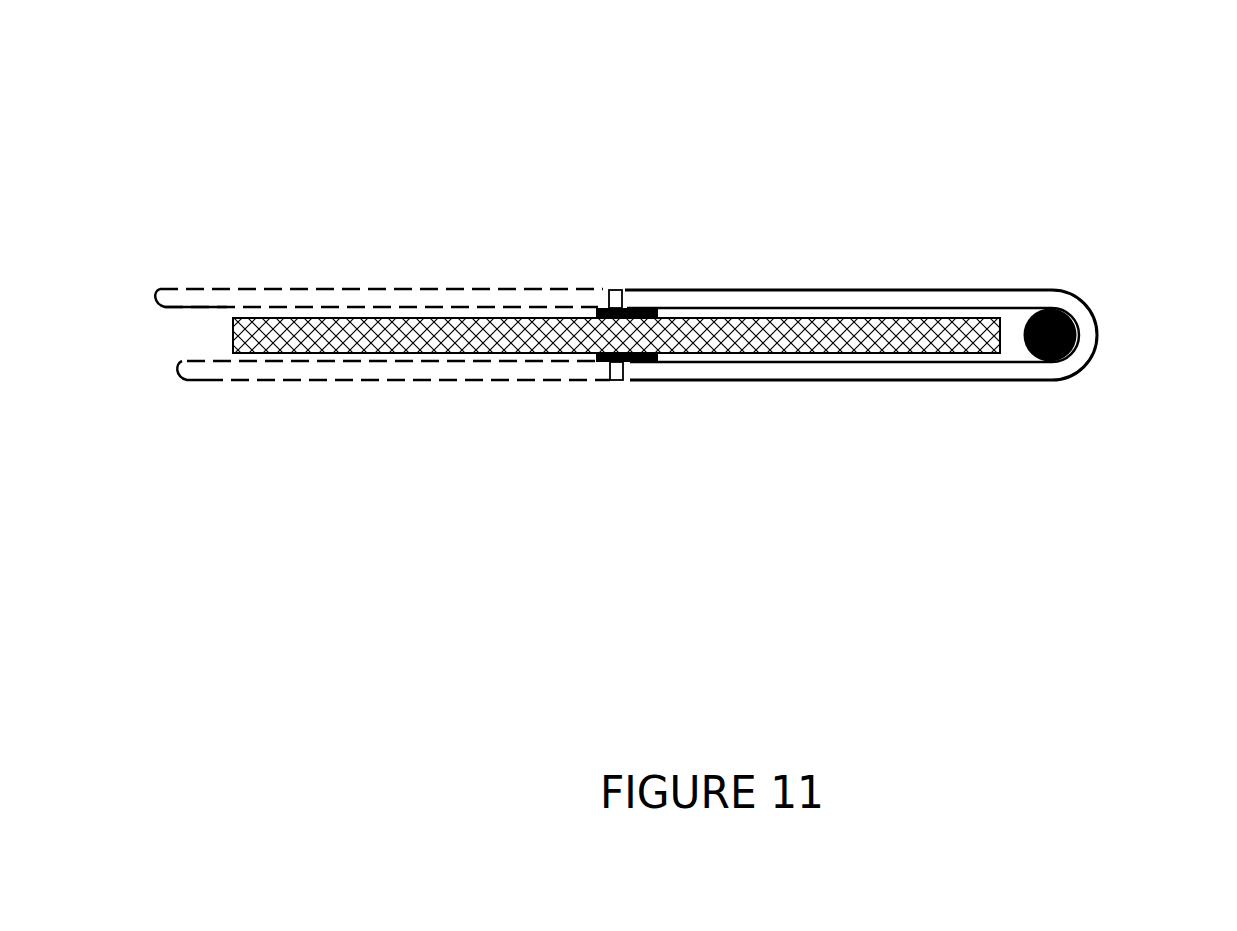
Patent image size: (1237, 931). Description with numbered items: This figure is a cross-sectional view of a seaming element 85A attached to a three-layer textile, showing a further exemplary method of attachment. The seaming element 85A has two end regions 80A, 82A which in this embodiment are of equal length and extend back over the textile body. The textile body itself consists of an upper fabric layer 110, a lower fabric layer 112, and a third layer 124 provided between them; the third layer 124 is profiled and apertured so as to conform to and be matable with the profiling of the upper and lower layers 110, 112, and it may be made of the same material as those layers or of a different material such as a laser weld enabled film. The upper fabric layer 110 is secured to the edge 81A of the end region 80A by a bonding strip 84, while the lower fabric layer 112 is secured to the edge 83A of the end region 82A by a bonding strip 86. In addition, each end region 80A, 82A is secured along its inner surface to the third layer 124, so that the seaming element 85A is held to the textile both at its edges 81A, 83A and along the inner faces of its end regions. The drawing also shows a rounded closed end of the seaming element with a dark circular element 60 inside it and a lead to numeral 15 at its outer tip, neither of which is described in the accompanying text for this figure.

The seaming element 85A is at (372, 120).
The upper fabric layer 110 is at (389, 288).
The lower fabric layer 112 is at (374, 381).
The third layer 124 is at (266, 354).
The bonding strip 84 is at (610, 290).
The bonding strip 86 is at (610, 362).
The edge of end region 81A is at (624, 290).
The edge of end region 83A is at (627, 380).
The end region 80A is at (803, 263).
The end region 82A is at (838, 407).
The distal tip 15 is at (1097, 343).
The marker 60 is at (1062, 312).